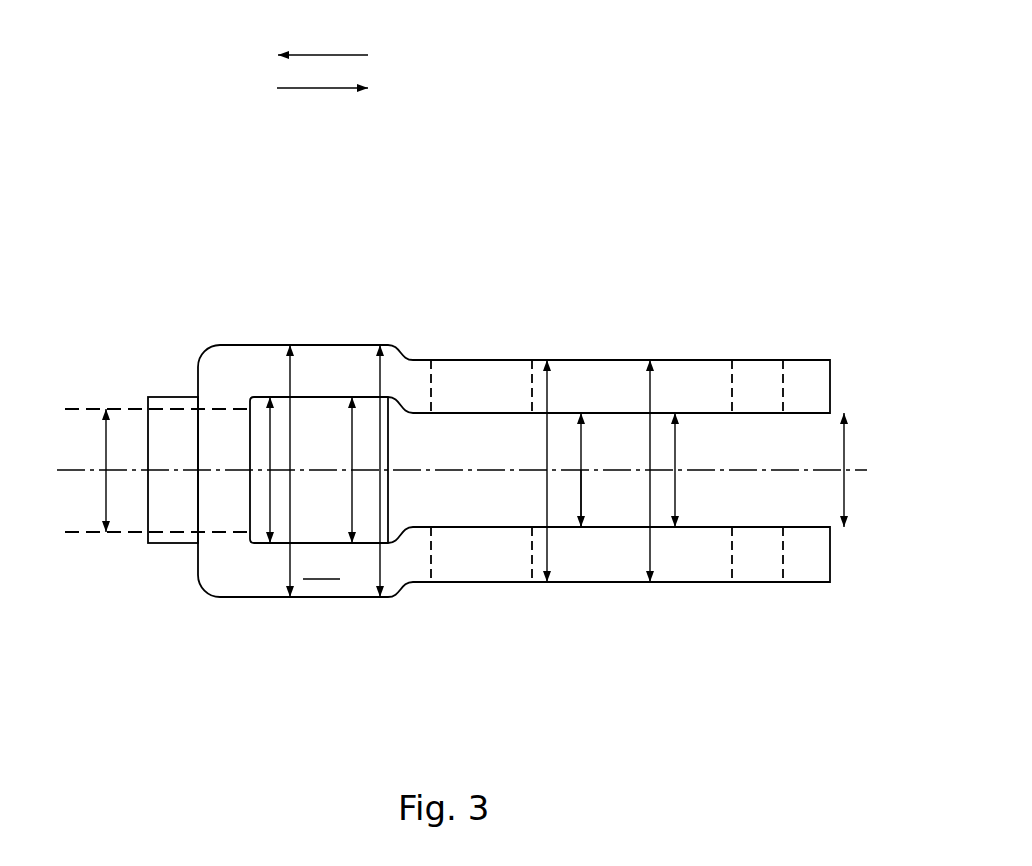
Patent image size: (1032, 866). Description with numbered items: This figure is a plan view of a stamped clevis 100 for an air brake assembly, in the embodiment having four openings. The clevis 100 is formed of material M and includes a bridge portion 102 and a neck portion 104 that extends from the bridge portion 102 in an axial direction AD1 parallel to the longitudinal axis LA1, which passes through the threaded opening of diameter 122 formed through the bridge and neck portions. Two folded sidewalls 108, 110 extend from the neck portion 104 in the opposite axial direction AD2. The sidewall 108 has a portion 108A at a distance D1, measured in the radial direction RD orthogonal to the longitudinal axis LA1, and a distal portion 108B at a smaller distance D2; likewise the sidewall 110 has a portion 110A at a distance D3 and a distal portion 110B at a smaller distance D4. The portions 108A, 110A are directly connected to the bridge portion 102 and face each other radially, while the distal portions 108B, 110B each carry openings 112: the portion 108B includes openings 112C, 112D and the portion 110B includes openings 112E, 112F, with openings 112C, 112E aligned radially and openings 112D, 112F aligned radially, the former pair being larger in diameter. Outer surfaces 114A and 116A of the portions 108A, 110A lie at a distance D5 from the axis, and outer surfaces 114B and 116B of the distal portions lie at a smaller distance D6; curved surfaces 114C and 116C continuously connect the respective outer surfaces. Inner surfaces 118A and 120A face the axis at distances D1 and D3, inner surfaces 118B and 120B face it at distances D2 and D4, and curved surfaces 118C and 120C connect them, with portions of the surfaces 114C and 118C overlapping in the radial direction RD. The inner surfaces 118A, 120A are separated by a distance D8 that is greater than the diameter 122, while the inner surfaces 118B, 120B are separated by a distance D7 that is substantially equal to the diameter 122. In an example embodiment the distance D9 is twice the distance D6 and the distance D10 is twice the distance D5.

The stamped clevis 100 is at (651, 157).
The bridge portion 102 is at (225, 370).
The neck portion 104 is at (170, 395).
The folded sidewall 108 is at (398, 334).
The sidewall portion 108A is at (305, 342).
The sidewall portion 108B is at (606, 356).
The folded sidewall 110 is at (399, 614).
The sidewall portion 110A is at (313, 600).
The sidewall portion 110B is at (606, 594).
The opening 112 is at (433, 397).
The opening 112C is at (494, 352).
The opening 112D is at (733, 391).
The opening 112E is at (530, 562).
The opening 112F is at (733, 565).
The outer surface 114A is at (236, 345).
The outer surface 114B is at (640, 360).
The curved surface 114C is at (405, 353).
The outer surface 116A is at (253, 598).
The outer surface 116B is at (690, 583).
The curved surface 116C is at (407, 590).
The inner surface 118A is at (312, 397).
The inner surface 118B is at (809, 413).
The curved surface 118C is at (394, 413).
The inner surface 120A is at (314, 543).
The inner surface 120B is at (817, 527).
The curved surface 120C is at (393, 543).
The diameter 122 is at (105, 495).
The distance D1 is at (380, 345).
The distance D2 is at (583, 445).
The distance D3 is at (353, 497).
The distance D4 is at (583, 488).
The distance D5 is at (289, 382).
The distance D6 is at (548, 398).
The distance D7 is at (678, 447).
The distance D8 is at (270, 492).
The distance D9 is at (651, 412).
The distance D10 is at (383, 442).
The material M is at (321, 568).
The radial direction RD is at (847, 438).
The longitudinal axis LA1 is at (863, 473).
The axial direction AD1 is at (313, 54).
The axial direction AD2 is at (326, 89).